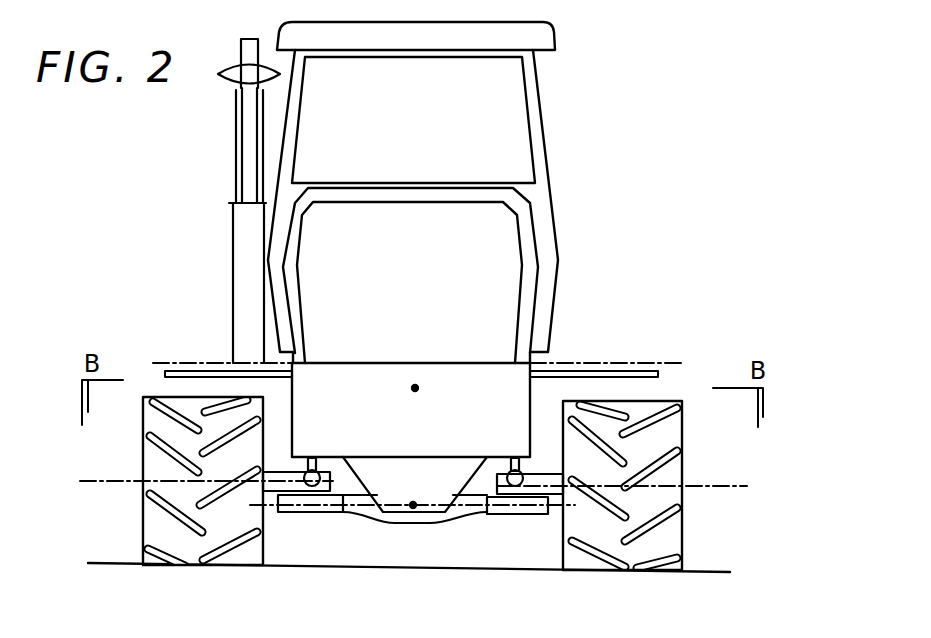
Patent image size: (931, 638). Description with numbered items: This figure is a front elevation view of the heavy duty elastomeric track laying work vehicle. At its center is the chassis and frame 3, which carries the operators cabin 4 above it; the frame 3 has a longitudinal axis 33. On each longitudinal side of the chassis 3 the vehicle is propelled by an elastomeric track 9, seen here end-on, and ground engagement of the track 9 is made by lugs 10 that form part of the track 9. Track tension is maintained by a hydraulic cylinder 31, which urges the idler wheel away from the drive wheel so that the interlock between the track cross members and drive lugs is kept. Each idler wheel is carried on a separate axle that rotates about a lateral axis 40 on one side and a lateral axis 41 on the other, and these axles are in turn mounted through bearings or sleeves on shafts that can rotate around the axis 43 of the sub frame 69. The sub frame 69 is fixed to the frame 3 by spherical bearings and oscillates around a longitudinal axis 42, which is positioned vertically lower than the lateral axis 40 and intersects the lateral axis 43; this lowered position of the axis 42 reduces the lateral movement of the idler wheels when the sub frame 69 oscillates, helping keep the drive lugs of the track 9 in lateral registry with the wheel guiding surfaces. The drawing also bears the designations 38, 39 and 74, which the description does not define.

The chassis and frame 3 is at (520, 383).
The operators cabin 4 is at (532, 90).
The elastomeric track 9 is at (415, 504).
The lugs 10 is at (229, 590).
The hydraulic cylinder 31 is at (316, 460).
The longitudinal axis 33 is at (418, 388).
The left side 38 is at (180, 196).
The right side 39 is at (645, 204).
The lateral axis 40 is at (102, 483).
The lateral axis 41 is at (733, 490).
The longitudinal axis 42 is at (413, 507).
The axis of sub-frame 43 is at (330, 512).
The sub frame 69 is at (462, 516).
The horizontal axis line 74 is at (672, 363).